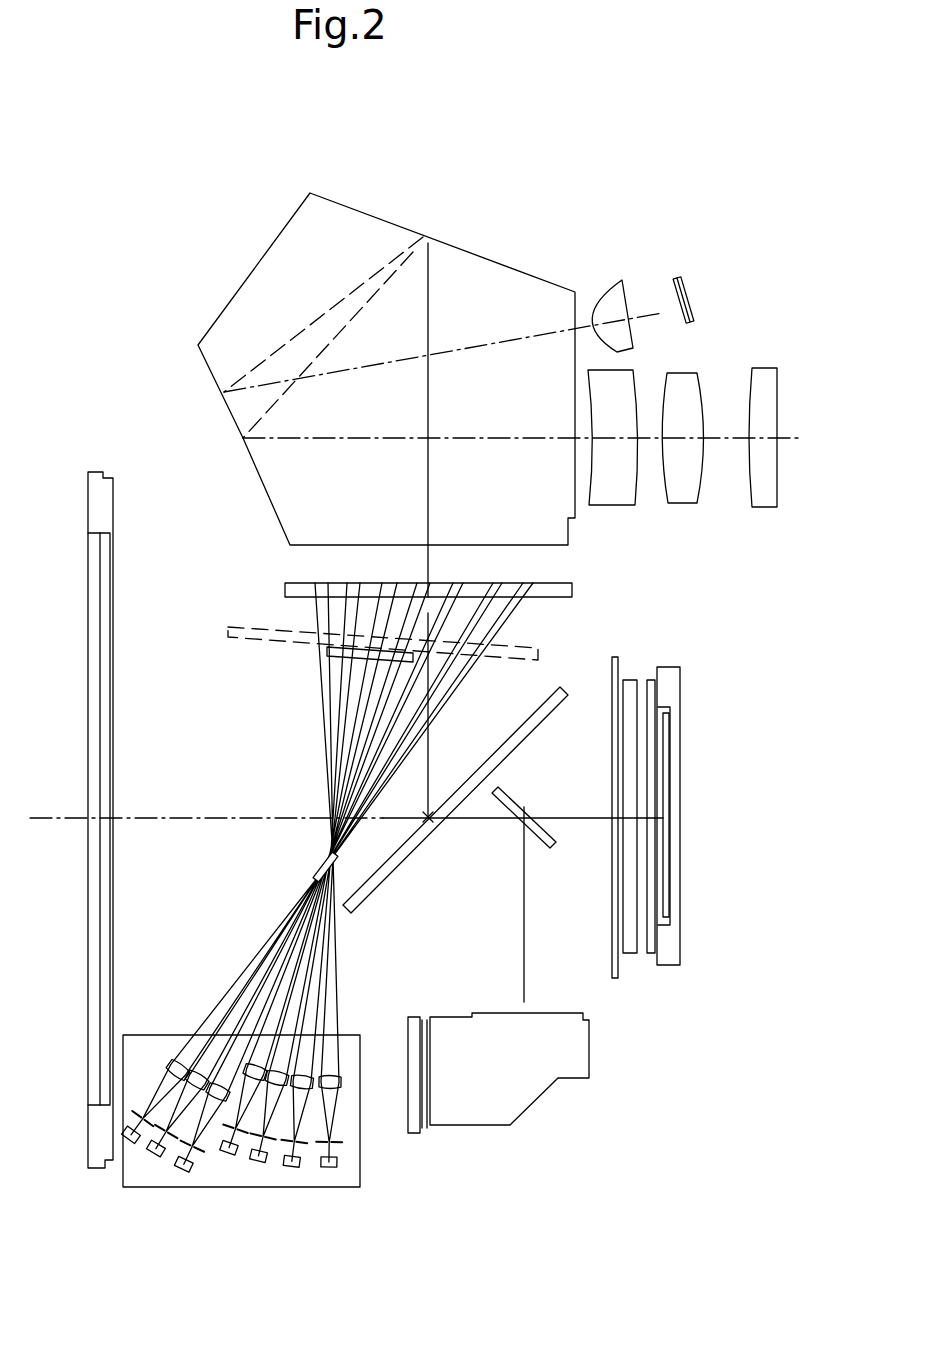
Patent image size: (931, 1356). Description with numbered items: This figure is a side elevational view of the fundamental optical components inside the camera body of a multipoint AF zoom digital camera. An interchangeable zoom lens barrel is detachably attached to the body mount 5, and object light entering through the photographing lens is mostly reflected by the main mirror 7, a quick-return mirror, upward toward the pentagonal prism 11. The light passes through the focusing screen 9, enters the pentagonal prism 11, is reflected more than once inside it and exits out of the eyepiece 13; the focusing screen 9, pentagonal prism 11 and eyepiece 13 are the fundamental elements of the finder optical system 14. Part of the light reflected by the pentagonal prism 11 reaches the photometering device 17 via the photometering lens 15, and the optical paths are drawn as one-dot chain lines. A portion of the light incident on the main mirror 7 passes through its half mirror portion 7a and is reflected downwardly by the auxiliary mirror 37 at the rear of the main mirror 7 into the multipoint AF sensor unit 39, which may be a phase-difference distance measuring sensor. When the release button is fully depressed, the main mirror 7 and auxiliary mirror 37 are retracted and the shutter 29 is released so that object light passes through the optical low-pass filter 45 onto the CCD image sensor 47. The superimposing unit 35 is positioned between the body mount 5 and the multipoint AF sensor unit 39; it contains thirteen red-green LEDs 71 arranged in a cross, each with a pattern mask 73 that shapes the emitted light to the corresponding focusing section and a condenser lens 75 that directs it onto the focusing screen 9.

The body mount 5 is at (104, 470).
The main mirror 7 is at (243, 639).
The half mirror portion 7a is at (430, 822).
The focusing screen 9 is at (285, 590).
The pentagonal prism 11 is at (275, 262).
The eyepiece 13 is at (590, 518).
The finder optical system 14 is at (522, 226).
The photometering lens 15 is at (618, 280).
The photometering device 17 is at (681, 276).
The shutter 29 is at (614, 657).
The superimposing unit 35 is at (350, 1190).
The auxiliary mirror 37 is at (335, 662).
The multipoint AF sensor unit 39 is at (560, 1040).
The optical low-pass filter 45 is at (630, 680).
The CCD image sensor 47 is at (668, 955).
The red-green LED 71 is at (131, 1145).
The pattern mask 73 is at (338, 1146).
The condenser lens 75 is at (336, 1080).